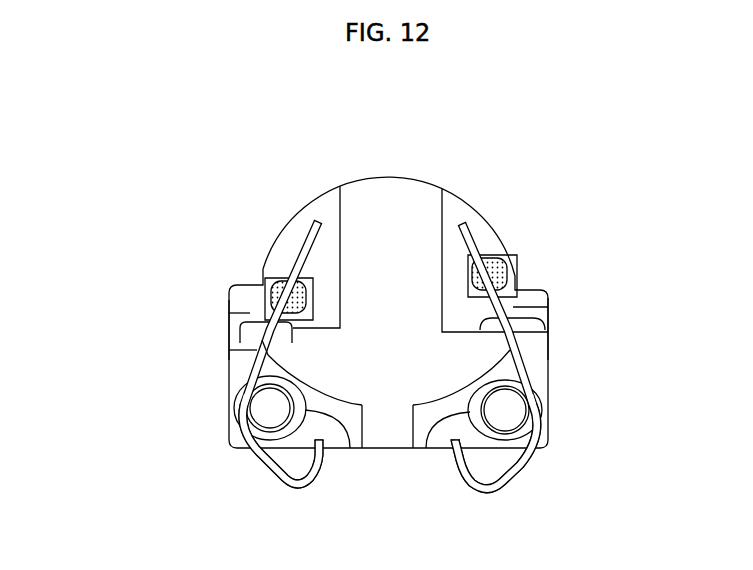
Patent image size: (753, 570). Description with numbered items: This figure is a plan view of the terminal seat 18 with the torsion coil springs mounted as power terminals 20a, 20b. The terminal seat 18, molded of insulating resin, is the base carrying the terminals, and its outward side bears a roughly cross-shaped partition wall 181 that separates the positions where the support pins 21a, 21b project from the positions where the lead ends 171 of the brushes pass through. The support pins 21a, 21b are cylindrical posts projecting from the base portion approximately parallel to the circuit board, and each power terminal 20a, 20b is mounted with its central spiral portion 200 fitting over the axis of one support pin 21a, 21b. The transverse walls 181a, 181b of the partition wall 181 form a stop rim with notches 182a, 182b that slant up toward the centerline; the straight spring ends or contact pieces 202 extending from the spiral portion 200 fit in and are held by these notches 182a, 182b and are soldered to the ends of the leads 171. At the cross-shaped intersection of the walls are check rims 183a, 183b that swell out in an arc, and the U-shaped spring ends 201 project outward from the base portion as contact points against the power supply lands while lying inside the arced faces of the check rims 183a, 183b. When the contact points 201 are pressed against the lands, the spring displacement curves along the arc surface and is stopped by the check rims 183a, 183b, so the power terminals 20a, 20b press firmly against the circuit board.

The terminal seat 18 is at (555, 446).
The partition wall 181 is at (373, 218).
The transverse wall 181a is at (227, 337).
The transverse wall 181b is at (549, 334).
The notch 182a is at (280, 320).
The notch 182b is at (549, 303).
The check rim 183a is at (240, 387).
The check rim 183b is at (525, 392).
The support pin 21a is at (263, 408).
The support pin 21b is at (507, 412).
The power terminal 20a is at (265, 477).
The power terminal 20b is at (520, 477).
The spiral portion 200 is at (352, 448).
The U-shaped spring end 201 is at (296, 487).
The contact piece 202 is at (310, 237).
The lead end 171 is at (280, 272).